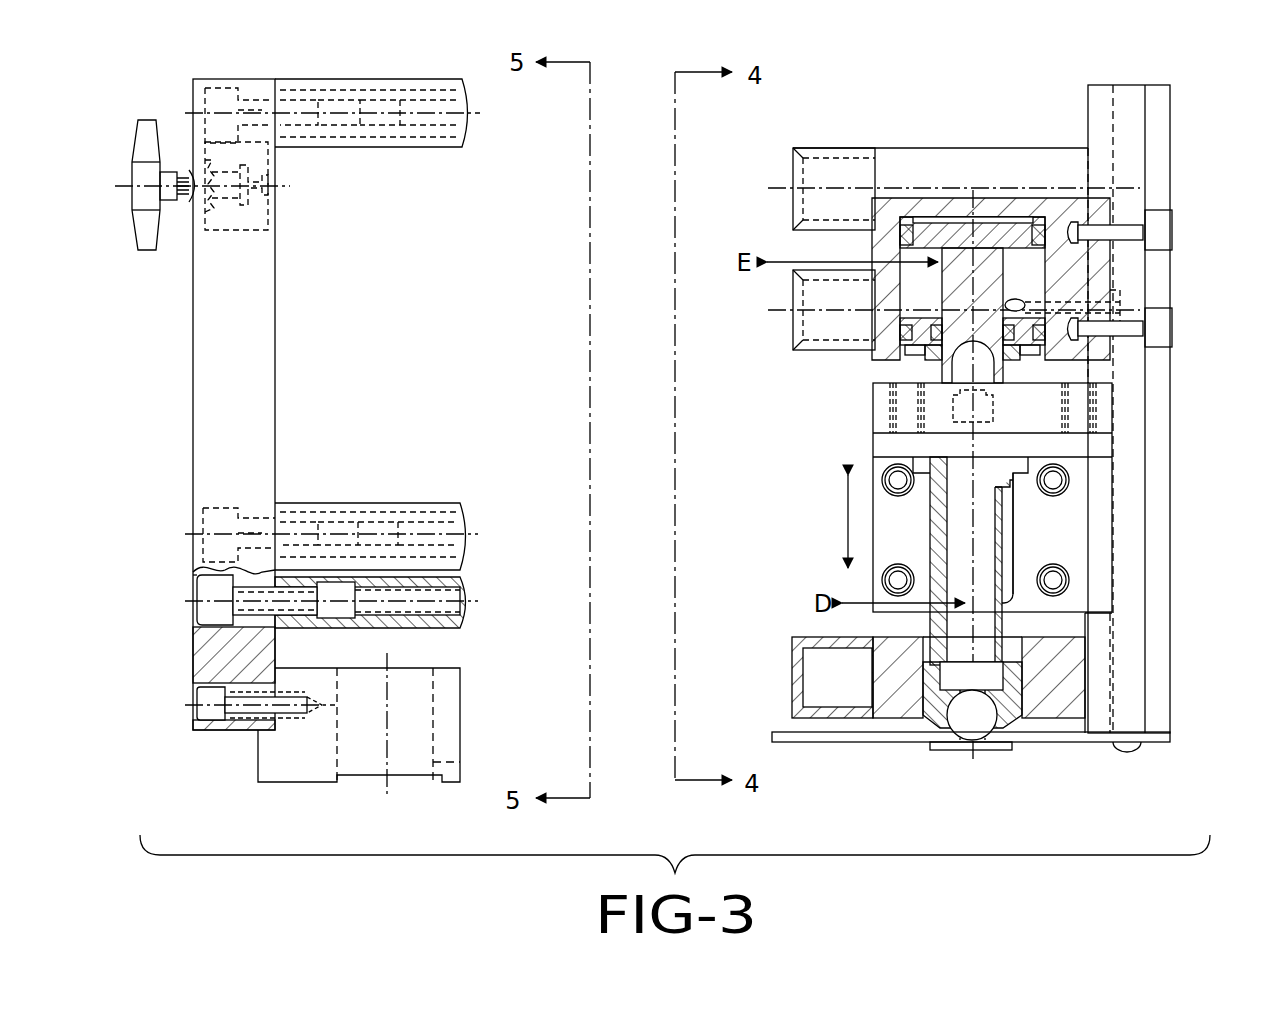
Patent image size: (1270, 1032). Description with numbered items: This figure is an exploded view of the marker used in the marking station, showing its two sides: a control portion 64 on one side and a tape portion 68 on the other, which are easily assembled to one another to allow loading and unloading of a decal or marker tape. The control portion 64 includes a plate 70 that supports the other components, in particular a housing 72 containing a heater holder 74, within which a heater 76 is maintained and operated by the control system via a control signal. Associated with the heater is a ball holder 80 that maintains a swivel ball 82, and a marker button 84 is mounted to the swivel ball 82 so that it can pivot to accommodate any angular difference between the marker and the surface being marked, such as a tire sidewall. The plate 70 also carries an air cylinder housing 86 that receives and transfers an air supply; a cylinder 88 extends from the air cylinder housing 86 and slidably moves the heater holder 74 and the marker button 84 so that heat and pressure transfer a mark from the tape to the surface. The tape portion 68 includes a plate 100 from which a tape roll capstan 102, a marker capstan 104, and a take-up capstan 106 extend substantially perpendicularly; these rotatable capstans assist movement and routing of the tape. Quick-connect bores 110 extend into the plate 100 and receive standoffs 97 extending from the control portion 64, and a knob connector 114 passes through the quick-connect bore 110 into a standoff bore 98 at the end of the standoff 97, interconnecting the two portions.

The control portion 64 is at (940, 126).
The tape portion 68 is at (440, 406).
The plate 70 is at (1158, 138).
The housing 72 is at (873, 450).
The heater holder 74 is at (1025, 523).
The heater 76 is at (980, 540).
The ball holder 80 is at (1015, 690).
The swivel ball 82 is at (955, 728).
The marker button 84 is at (985, 745).
The air cylinder housing 86 is at (890, 240).
The cylinder 88 is at (940, 368).
The standoff 97 is at (800, 167).
The standoff bore 98 is at (830, 700).
The plate 100 is at (223, 393).
The tape roll capstan 102 is at (403, 500).
The marker capstan 104 is at (425, 630).
The take-up capstan 106 is at (378, 80).
The quick-connect bore 110 is at (237, 230).
The knob connector 114 is at (143, 143).